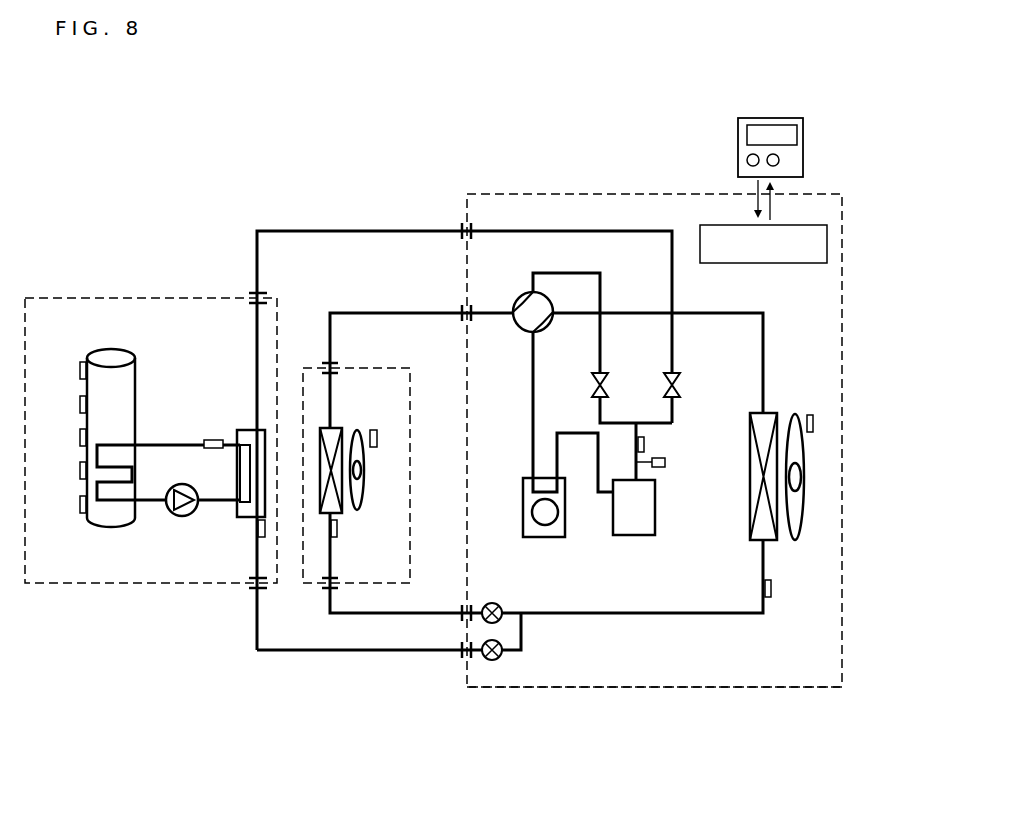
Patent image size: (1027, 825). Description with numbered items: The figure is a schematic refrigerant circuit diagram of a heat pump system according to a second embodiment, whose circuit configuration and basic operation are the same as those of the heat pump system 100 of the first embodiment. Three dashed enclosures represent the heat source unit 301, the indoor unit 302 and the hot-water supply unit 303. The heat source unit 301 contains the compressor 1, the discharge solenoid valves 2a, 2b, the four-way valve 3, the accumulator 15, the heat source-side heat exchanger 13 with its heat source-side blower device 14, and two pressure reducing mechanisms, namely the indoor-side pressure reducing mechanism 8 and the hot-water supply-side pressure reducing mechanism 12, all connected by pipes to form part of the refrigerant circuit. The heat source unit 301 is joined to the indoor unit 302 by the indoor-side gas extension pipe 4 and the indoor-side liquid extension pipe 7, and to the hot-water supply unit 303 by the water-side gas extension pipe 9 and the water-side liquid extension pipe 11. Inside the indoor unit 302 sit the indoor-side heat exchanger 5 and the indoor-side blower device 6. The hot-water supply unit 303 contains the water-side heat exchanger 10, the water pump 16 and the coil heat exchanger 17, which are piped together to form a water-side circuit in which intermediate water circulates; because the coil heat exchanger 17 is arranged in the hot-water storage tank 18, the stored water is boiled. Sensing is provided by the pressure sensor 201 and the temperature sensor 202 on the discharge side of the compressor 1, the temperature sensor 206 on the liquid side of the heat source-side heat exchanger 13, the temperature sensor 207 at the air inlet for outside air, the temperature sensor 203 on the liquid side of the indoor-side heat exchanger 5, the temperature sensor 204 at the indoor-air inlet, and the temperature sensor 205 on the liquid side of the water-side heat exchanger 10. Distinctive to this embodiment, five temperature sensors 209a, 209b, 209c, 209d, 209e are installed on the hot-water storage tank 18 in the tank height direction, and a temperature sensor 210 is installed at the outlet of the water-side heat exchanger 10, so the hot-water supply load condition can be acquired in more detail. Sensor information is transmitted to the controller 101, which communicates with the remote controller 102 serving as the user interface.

The compressor 1 is at (657, 520).
The discharge solenoid valve 2a is at (606, 372).
The discharge solenoid valve 2b is at (678, 372).
The four-way valve 3 is at (522, 299).
The indoor-side gas extension pipe 4 is at (450, 314).
The indoor-side heat exchanger 5 is at (330, 428).
The indoor-side blower device 6 is at (364, 497).
The indoor-side liquid extension pipe 7 is at (441, 612).
The indoor-side pressure reducing mechanism 8 is at (500, 608).
The water-side gas extension pipe 9 is at (416, 232).
The water-side heat exchanger 10 is at (240, 432).
The water-side liquid extension pipe 11 is at (360, 652).
The hot-water supply-side pressure reducing mechanism 12 is at (504, 655).
The heat source-side heat exchanger 13 is at (770, 542).
The heat source-side blower device 14 is at (790, 544).
The accumulator 15 is at (545, 538).
The water pump 16 is at (175, 518).
The coil heat exchanger 17 is at (110, 520).
The hot-water storage tank 18 is at (136, 383).
The heat pump system 100 is at (707, 687).
The controller 101 is at (800, 265).
The remote controller 102 is at (803, 150).
The pressure sensor 201 is at (667, 463).
The temperature sensor 202 is at (646, 444).
The temperature sensor 203 is at (338, 530).
The temperature sensor 204 is at (396, 428).
The temperature sensor 205 is at (256, 536).
The temperature sensor 206 is at (771, 598).
The temperature sensor 207 is at (808, 412).
The temperature sensor 209a is at (80, 502).
The temperature sensor 209b is at (80, 468).
The temperature sensor 209c is at (80, 435).
The temperature sensor 209d is at (80, 402).
The temperature sensor 209e is at (80, 368).
The temperature sensor 210 is at (210, 439).
The heat source unit 301 is at (467, 194).
The indoor unit 302 is at (356, 368).
The hot-water supply unit 303 is at (158, 297).